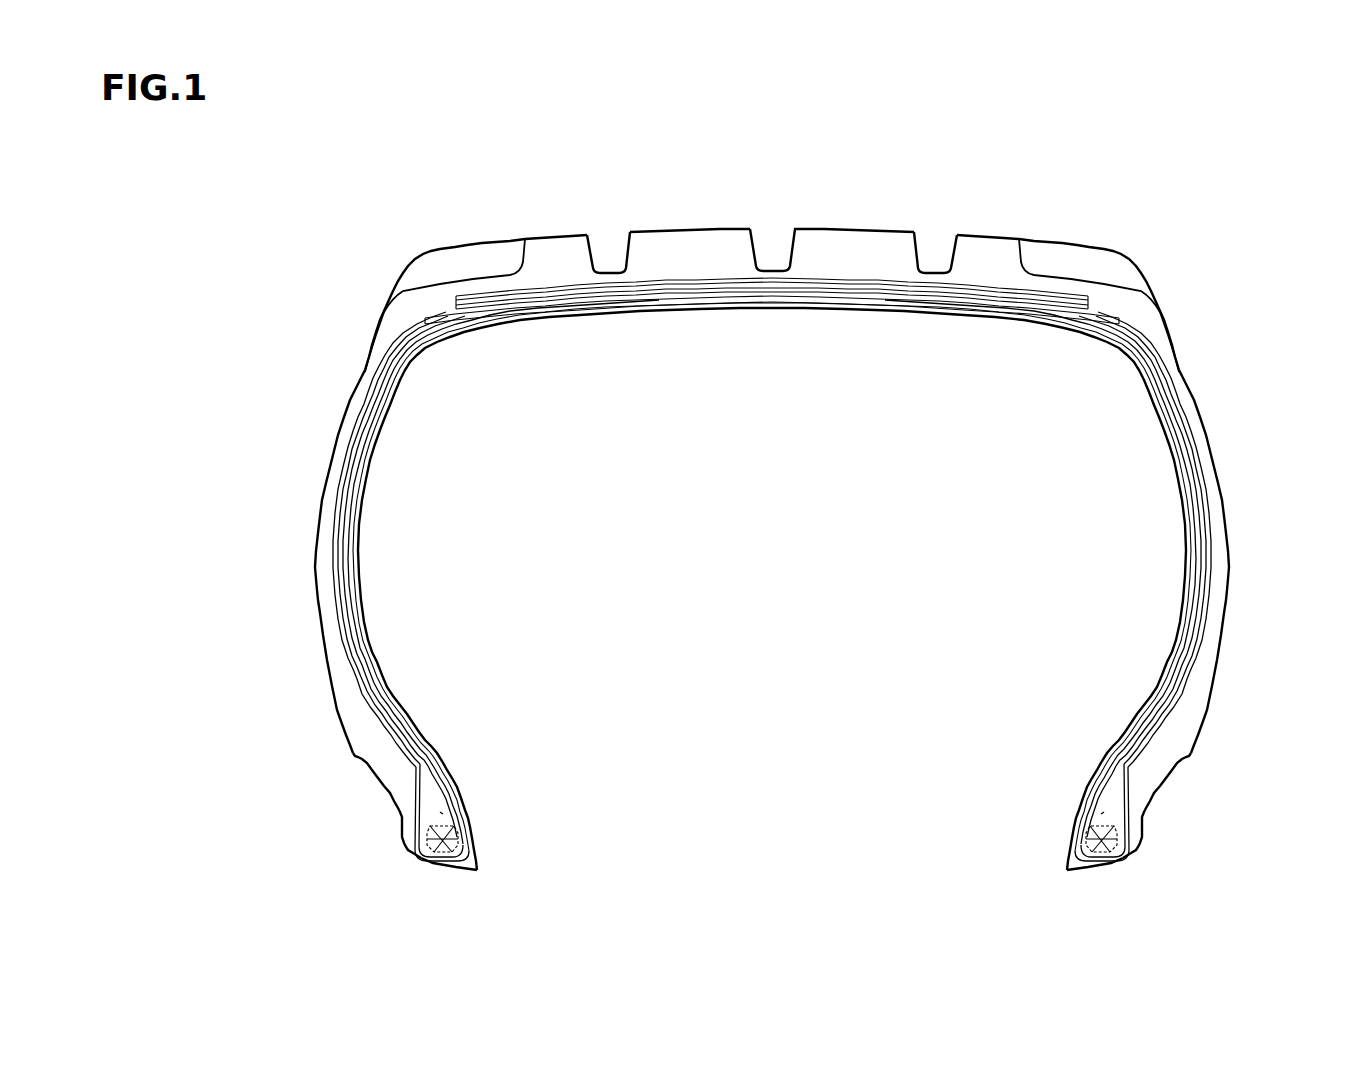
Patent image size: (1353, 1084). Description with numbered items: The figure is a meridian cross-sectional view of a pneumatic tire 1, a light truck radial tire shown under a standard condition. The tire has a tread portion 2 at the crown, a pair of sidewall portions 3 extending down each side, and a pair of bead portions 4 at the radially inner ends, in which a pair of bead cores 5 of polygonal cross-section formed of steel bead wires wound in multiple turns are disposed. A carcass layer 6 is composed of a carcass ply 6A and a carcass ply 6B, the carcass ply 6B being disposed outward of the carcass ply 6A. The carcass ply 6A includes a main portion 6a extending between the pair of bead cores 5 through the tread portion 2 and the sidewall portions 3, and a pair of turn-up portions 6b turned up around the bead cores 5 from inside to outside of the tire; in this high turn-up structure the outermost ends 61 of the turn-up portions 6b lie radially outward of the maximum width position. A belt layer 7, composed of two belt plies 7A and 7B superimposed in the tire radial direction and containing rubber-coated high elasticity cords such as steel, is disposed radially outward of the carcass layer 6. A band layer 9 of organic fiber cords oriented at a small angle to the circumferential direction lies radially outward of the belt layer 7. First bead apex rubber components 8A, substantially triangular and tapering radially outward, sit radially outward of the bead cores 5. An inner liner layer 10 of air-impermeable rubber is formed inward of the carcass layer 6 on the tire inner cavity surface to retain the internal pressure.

The pneumatic tire 1 is at (1139, 197).
The tread portion 2 is at (869, 247).
The sidewall portion 3 is at (329, 461).
The bead portion 4 is at (1156, 794).
The bead core 5 is at (431, 847).
The carcass layer 6 is at (767, 580).
The carcass ply 6A is at (407, 372).
The carcass ply 6B is at (767, 539).
The outermost end 61 is at (1205, 530).
The main portion 6a is at (452, 785).
The turn-up portion 6b is at (398, 728).
The belt layer 7 is at (772, 342).
The belt ply 7A is at (970, 300).
The belt ply 7B is at (663, 287).
The first bead apex rubber component 8A is at (442, 812).
The band layer 9 is at (983, 283).
The inner liner layer 10 is at (823, 303).